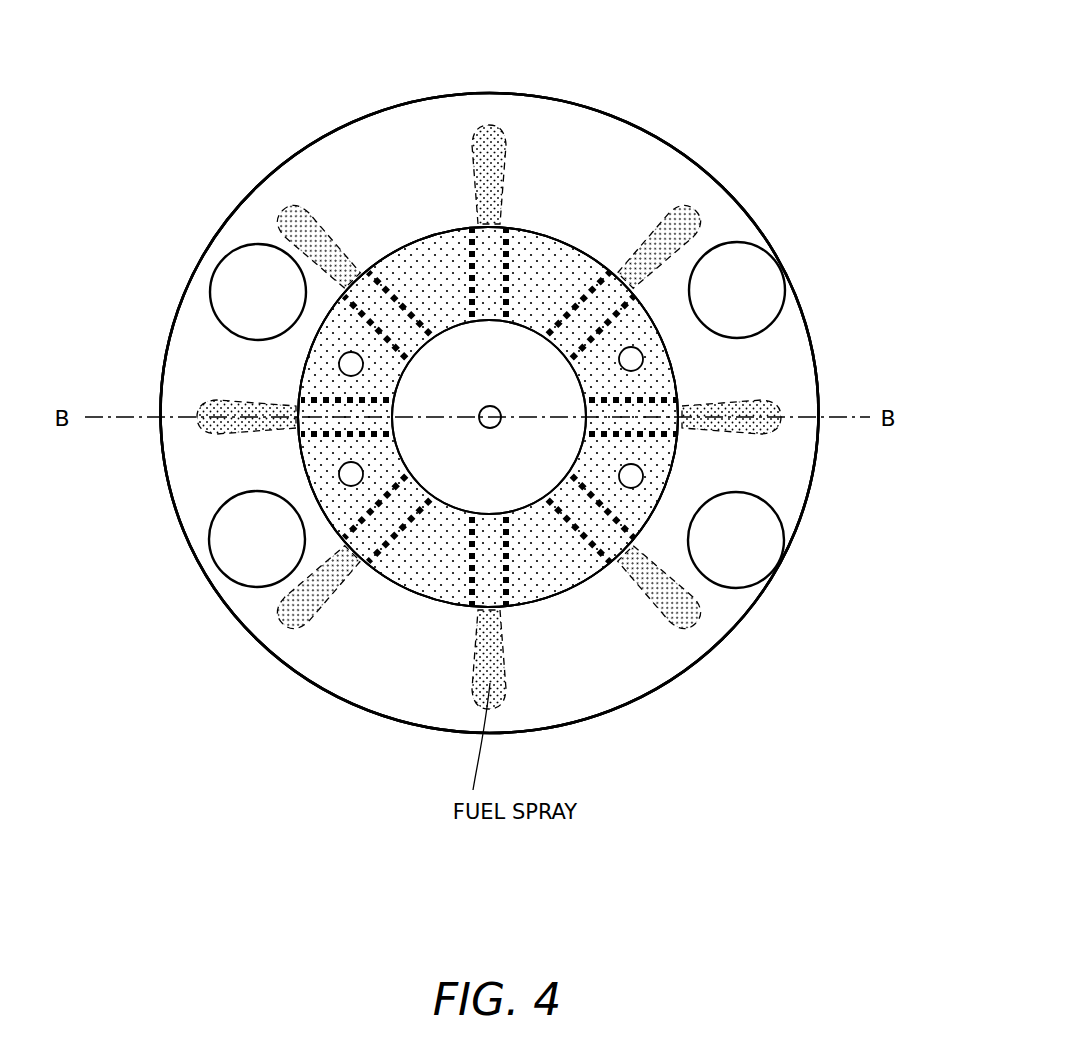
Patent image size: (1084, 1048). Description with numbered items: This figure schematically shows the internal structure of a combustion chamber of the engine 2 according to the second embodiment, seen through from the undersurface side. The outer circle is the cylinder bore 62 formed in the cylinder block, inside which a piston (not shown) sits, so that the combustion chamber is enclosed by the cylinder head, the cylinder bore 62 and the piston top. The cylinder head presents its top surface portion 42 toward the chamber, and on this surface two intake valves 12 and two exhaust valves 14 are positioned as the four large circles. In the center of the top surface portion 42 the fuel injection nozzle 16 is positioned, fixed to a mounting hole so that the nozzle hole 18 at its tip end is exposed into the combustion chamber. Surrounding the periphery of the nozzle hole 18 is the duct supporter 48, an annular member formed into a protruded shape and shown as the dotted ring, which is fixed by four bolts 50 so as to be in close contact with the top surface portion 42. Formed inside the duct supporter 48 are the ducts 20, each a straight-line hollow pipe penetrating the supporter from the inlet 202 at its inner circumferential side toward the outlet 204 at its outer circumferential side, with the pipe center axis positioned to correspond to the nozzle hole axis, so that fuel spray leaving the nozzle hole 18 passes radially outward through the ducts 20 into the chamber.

The engine 2 is at (735, 58).
The intake valve 12 is at (233, 277).
The exhaust valve 14 is at (752, 290).
The fuel injection nozzle 16 is at (465, 465).
The nozzle hole 18 is at (488, 412).
The duct 20 is at (623, 428).
The top surface portion 42 is at (585, 165).
The duct supporter 48 is at (553, 550).
The bolt 50 is at (637, 477).
The cylinder bore 62 is at (553, 93).
The inlet 202 is at (580, 417).
The outlet 204 is at (678, 418).